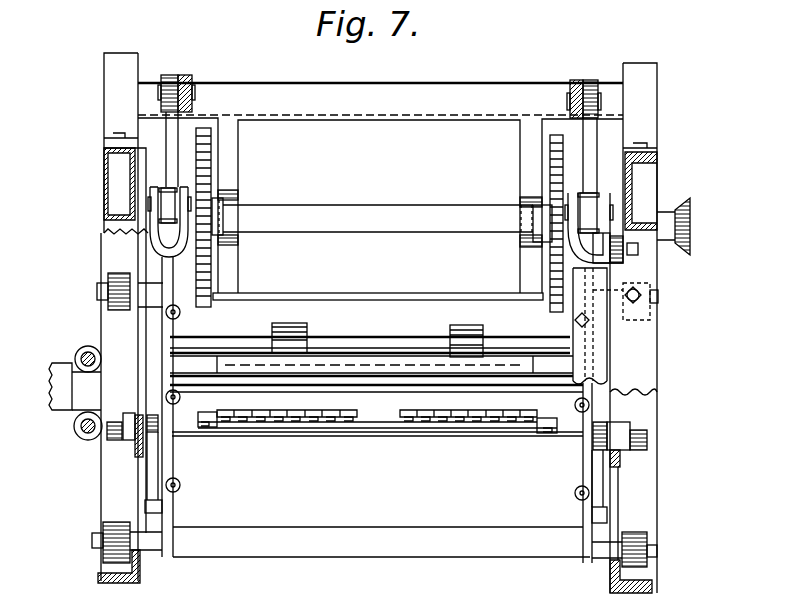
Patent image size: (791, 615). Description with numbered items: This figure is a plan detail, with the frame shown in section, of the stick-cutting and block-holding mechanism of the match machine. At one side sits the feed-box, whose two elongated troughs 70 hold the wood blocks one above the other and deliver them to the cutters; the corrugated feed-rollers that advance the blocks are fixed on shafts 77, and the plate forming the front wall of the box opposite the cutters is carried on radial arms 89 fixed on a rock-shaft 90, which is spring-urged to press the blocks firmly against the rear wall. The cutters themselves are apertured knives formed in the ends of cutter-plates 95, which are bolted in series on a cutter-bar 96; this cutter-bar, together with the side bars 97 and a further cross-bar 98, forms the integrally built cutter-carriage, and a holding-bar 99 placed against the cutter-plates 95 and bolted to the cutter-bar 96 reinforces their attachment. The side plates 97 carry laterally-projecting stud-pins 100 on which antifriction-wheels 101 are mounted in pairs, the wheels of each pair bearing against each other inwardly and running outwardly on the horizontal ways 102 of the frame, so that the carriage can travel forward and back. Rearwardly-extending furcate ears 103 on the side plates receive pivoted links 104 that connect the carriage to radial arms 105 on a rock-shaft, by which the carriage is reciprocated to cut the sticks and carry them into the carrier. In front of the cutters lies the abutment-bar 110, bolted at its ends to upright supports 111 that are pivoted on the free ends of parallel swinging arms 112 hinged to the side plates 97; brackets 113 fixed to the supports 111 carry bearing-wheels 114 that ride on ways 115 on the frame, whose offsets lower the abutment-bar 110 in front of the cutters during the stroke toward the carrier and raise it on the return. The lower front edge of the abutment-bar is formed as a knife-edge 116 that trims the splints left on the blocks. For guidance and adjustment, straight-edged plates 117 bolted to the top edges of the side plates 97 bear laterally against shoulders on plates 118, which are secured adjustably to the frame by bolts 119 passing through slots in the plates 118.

The troughs 70 is at (57, 362).
The shafts 77 is at (84, 345).
The radial arms 89 is at (299, 329).
The rock-shaft 90 is at (525, 346).
The cutter-plate 95 is at (270, 413).
The cutter-bar 96 is at (548, 415).
The side bars 97 is at (173, 453).
The cross-bar 98 is at (403, 530).
The holding-bar 99 is at (483, 433).
The stud-pins 100 is at (600, 552).
The antifriction-wheels 101 is at (120, 313).
The ways 102 is at (103, 468).
The furcate ears 103 is at (148, 194).
The links 104 is at (171, 203).
The radial arms 105 is at (190, 77).
The abutment-bar 110 is at (337, 433).
The supports 111 is at (150, 415).
The swinging arms 112 is at (153, 470).
The brackets 113 is at (127, 442).
The bearing-wheels 114 is at (113, 422).
The ways 115 is at (107, 413).
The knife-edge 116 is at (408, 436).
The straight-edged plates 117 is at (578, 337).
The plates 118 is at (648, 353).
The bolts 119 is at (643, 293).